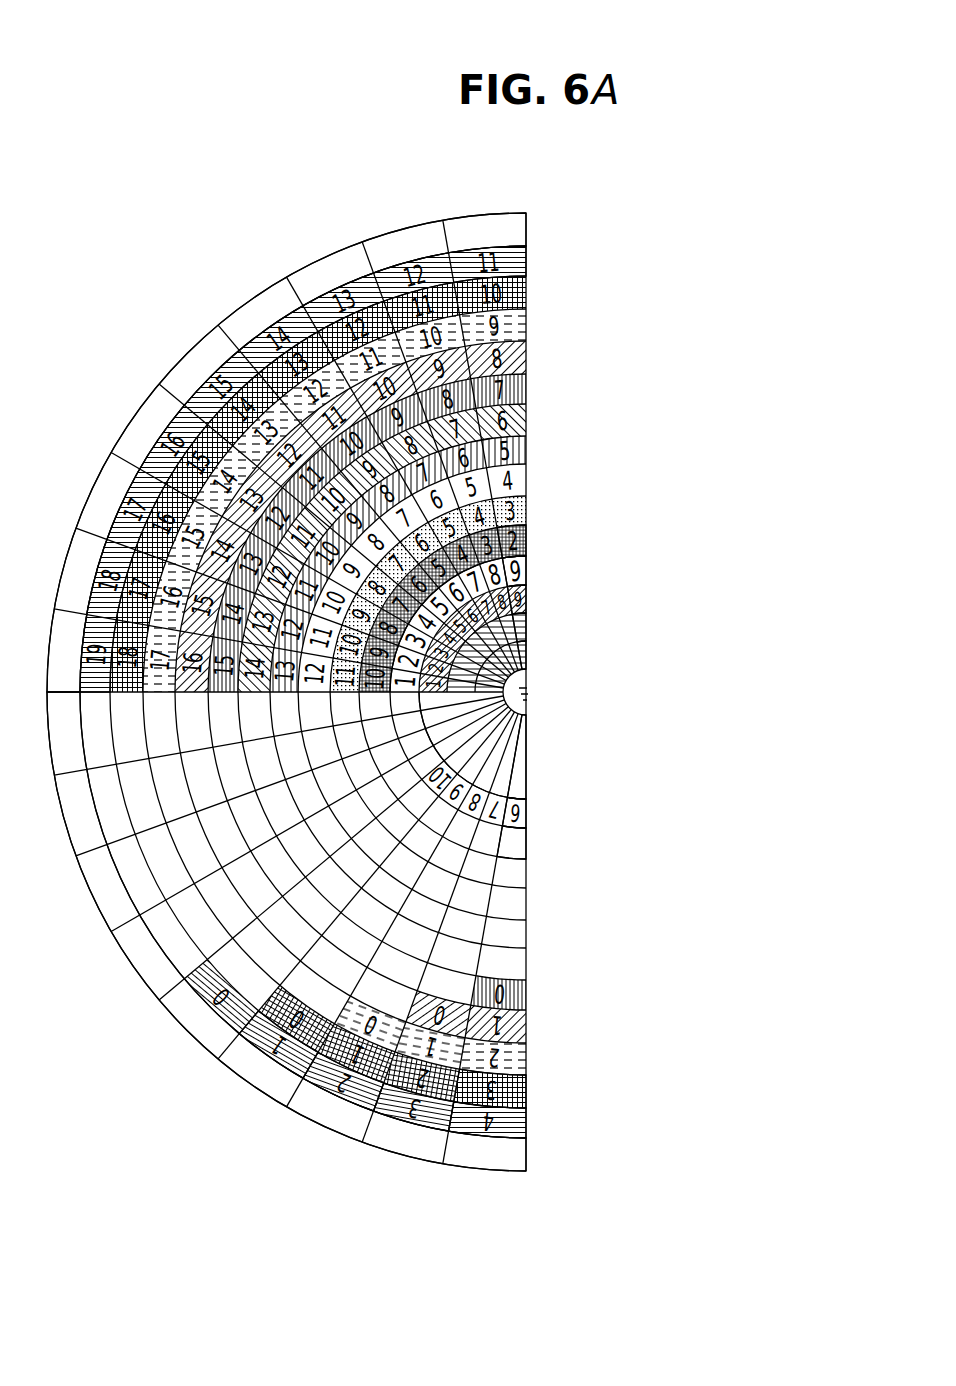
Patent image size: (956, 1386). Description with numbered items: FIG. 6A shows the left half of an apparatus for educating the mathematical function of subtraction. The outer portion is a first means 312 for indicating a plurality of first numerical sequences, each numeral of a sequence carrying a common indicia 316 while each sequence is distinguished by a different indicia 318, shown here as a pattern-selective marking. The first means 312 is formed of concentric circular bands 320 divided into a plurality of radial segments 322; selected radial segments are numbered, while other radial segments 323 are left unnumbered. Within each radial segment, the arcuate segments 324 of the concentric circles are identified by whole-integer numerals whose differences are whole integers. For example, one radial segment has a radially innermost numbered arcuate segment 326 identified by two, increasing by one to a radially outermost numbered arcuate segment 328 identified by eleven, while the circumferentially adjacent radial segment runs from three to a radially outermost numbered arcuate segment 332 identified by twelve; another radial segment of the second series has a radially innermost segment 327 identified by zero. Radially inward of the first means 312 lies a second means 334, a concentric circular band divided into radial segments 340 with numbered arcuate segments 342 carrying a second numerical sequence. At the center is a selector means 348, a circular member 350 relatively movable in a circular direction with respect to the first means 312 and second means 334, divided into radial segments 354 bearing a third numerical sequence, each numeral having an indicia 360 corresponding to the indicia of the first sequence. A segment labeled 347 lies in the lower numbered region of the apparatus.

The first means 312 is at (670, 276).
The common indicia 316 is at (496, 1147).
The different indicia 318 is at (533, 1090).
The circular bands 320 is at (272, 1066).
The radial segments 322 is at (336, 1106).
The unnumbered radial segments 323 is at (137, 980).
The arcuate segments 324 is at (416, 1134).
The radially innermost numbered arcuate segment 326 is at (533, 530).
The radially innermost segment 327 is at (531, 848).
The radially outermost numbered arcuate segment 328 is at (528, 262).
The radially outermost numbered arcuate segment 332 is at (397, 228).
The second means 334 is at (533, 562).
The radial segments 340 is at (533, 578).
The numbered arcuate segments 342 is at (533, 800).
The lower numbered cell 347 is at (533, 812).
The selector means 348 is at (533, 603).
The circular member 350 is at (533, 623).
The radial segments 354 is at (533, 740).
The indicia 360 is at (533, 647).